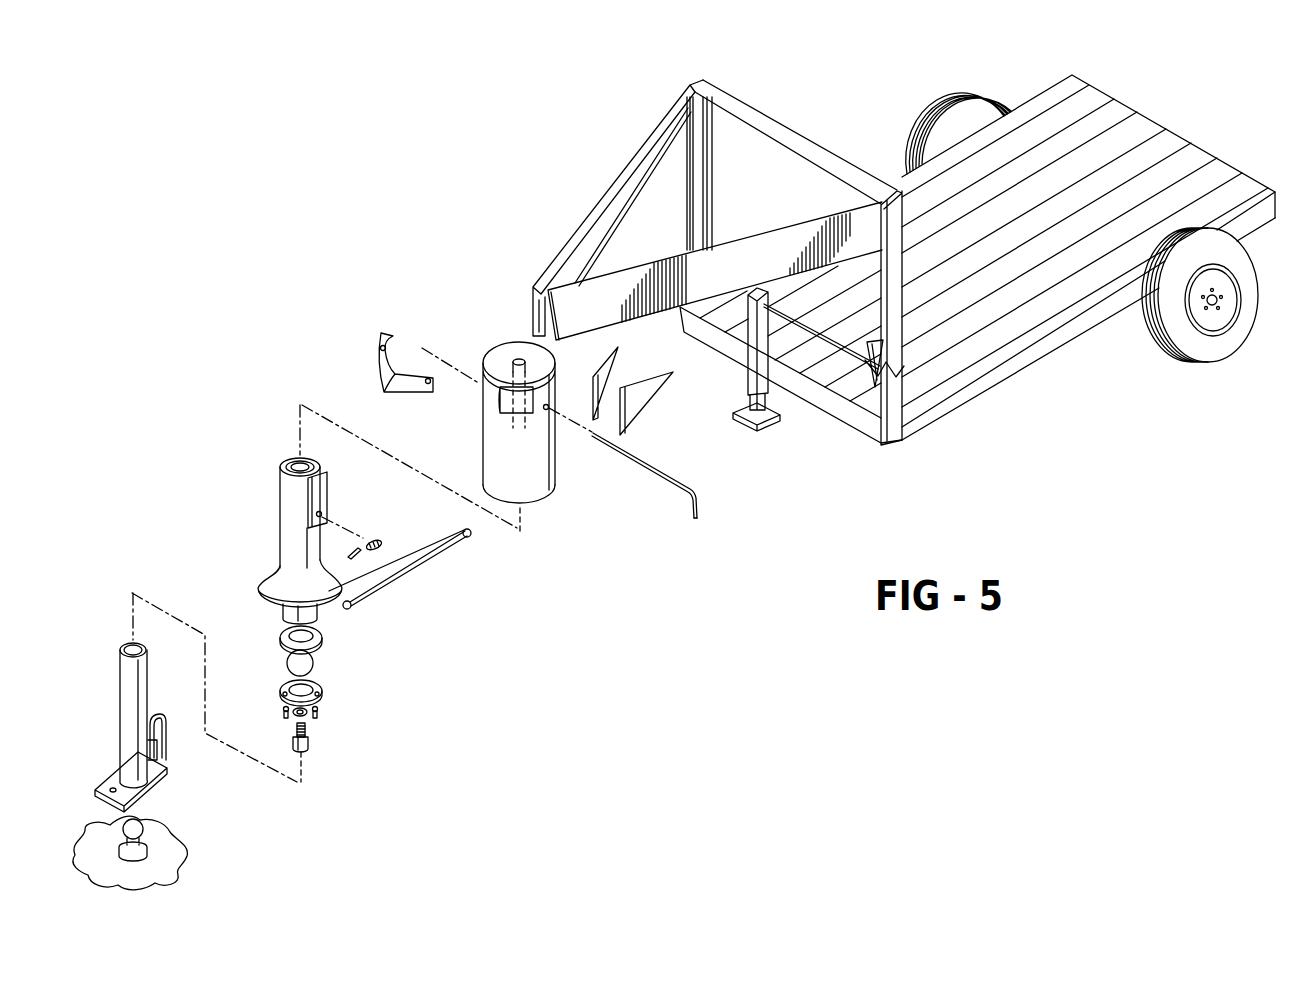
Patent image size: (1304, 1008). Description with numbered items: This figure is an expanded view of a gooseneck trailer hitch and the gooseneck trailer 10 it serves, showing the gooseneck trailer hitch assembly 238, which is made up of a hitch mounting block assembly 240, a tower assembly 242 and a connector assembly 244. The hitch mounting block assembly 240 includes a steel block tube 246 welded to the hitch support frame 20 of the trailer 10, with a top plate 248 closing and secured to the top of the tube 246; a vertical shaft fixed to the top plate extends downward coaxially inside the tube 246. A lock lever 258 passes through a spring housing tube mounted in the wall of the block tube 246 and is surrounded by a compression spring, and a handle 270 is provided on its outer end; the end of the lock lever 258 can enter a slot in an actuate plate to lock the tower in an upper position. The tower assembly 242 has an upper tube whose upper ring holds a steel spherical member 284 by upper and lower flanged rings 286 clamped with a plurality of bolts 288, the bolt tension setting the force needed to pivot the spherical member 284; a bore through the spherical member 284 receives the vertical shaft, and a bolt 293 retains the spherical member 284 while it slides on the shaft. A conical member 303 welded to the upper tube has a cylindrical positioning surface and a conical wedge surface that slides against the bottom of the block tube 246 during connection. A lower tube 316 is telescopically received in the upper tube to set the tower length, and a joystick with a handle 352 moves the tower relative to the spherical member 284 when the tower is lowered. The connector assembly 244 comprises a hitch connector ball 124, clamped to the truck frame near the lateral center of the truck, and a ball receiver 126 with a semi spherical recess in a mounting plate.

The gooseneck trailer 10 is at (948, 80).
The hitch support frame 20 is at (588, 218).
The gooseneck trailer hitch assembly 238 is at (505, 268).
The hitch mounting block assembly 240 is at (541, 510).
The tower assembly 242 is at (272, 520).
The connector assembly 244 is at (185, 808).
The steel block tube 246 is at (497, 443).
The top plate 248 is at (497, 357).
The lock lever 258 is at (625, 463).
The handle 270 is at (701, 514).
The spherical member 284 is at (315, 656).
The flanged rings 286 is at (323, 690).
The bolts 288 is at (322, 712).
The bolt 293 is at (310, 742).
The conical member 303 is at (261, 574).
The lower tube 316 is at (119, 674).
The handle 352 is at (355, 605).
The hitch connector ball 124 is at (155, 822).
The ball receiver 126 is at (140, 802).